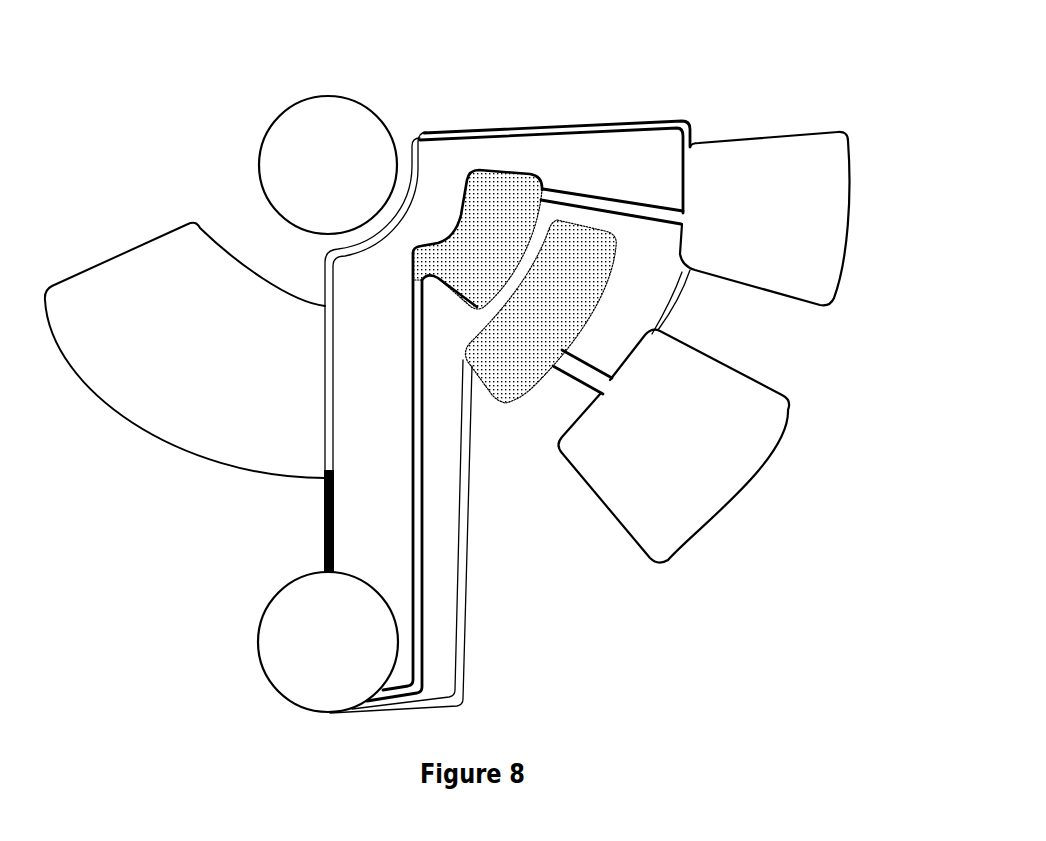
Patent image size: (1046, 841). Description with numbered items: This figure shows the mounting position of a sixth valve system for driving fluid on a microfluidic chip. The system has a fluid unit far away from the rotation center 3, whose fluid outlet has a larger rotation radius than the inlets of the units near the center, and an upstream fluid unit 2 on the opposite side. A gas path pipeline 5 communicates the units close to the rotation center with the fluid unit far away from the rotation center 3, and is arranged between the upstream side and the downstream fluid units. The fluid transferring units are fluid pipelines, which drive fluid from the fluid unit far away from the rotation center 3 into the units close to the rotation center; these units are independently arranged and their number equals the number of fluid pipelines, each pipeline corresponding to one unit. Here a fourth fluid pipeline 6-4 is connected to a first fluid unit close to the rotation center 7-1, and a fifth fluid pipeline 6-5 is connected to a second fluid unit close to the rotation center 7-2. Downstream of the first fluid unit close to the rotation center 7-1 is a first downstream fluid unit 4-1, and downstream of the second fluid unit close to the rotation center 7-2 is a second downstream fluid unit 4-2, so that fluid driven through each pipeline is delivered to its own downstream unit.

The upstream fluid unit 2 is at (127, 288).
The fluid unit far away from the rotation center 3 is at (295, 670).
The gas path pipeline 5 is at (618, 122).
The first downstream fluid unit 4-1 is at (822, 240).
The second downstream fluid unit 4-2 is at (725, 455).
The first fluid unit close to the rotation center 7-1 is at (488, 190).
The second fluid unit close to the rotation center 7-2 is at (520, 383).
The fourth fluid pipeline 6-4 is at (413, 548).
The fifth fluid pipeline 6-5 is at (465, 577).